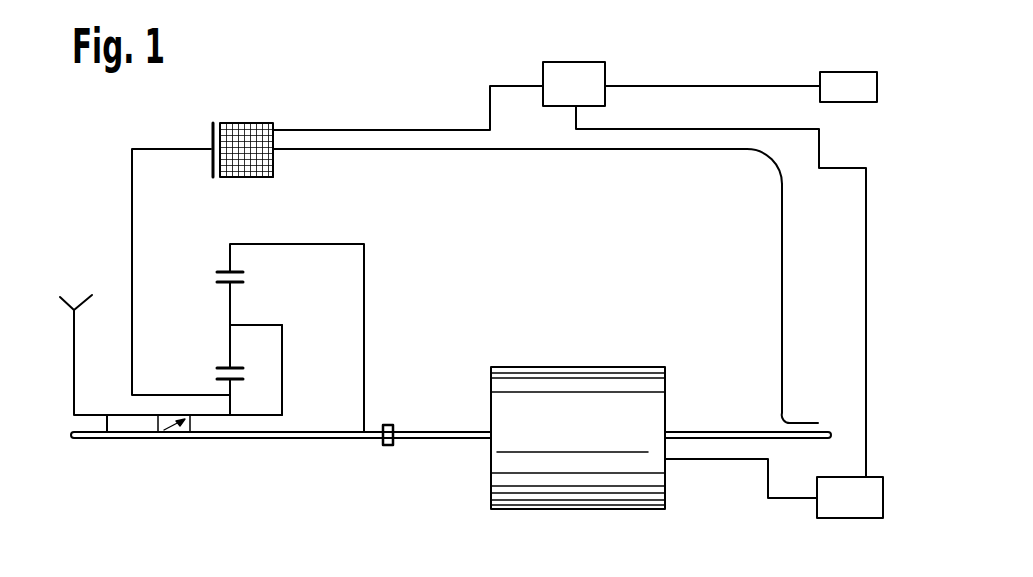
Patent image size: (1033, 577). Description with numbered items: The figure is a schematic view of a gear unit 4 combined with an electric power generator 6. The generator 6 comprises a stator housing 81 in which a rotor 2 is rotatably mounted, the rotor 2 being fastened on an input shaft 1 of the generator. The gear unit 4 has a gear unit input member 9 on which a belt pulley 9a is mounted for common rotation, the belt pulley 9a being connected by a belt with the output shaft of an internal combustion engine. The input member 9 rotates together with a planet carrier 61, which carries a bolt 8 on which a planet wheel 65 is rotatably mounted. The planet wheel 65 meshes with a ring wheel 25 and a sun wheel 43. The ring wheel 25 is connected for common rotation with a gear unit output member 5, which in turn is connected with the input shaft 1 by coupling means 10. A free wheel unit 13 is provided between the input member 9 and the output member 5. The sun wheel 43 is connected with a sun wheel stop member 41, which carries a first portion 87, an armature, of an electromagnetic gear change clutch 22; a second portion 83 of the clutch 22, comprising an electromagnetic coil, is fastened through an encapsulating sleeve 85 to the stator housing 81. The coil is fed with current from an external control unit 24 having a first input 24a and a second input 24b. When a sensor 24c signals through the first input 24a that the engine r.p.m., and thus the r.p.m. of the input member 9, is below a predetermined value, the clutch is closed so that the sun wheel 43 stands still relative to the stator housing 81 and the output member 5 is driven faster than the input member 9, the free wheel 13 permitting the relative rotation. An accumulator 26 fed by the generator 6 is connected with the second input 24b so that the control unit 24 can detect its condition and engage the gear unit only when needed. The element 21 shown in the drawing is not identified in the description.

The input shaft 1 is at (440, 440).
The rotor 2 is at (668, 372).
The gear unit 4 is at (290, 443).
The gear unit output member 5 is at (335, 441).
The electric power generator 6 is at (582, 511).
The bolt 8 is at (258, 325).
The gear unit input member 9 is at (107, 441).
The belt pulley 9a is at (74, 336).
The coupling means 10 is at (387, 425).
The free wheel unit 13 is at (176, 434).
The control circuit 21 is at (365, 287).
The electromagnetic gear change clutch 22 is at (251, 118).
The control unit 24 is at (598, 68).
The first input 24a is at (700, 86).
The second input 24b is at (705, 129).
The sensor 24c is at (835, 72).
The ring wheel 25 is at (217, 273).
The accumulator 26 is at (838, 507).
The sun wheel stop member 41 is at (132, 216).
The sun wheel 43 is at (240, 381).
The planet carrier 61 is at (283, 362).
The planet wheel 65 is at (228, 300).
The stator housing 81 is at (784, 282).
The second portion of the electromagnetic clutch 83 is at (268, 166).
The encapsulating sleeve 85 is at (613, 150).
The first portion of the electromagnetic clutch 87 is at (211, 134).